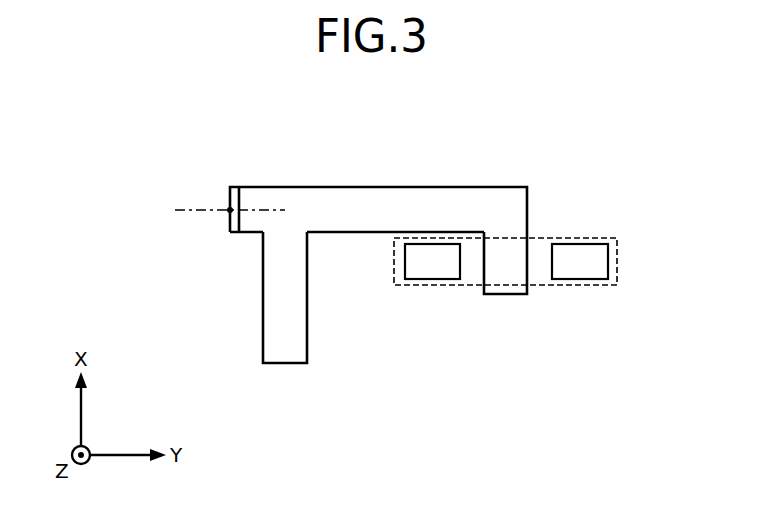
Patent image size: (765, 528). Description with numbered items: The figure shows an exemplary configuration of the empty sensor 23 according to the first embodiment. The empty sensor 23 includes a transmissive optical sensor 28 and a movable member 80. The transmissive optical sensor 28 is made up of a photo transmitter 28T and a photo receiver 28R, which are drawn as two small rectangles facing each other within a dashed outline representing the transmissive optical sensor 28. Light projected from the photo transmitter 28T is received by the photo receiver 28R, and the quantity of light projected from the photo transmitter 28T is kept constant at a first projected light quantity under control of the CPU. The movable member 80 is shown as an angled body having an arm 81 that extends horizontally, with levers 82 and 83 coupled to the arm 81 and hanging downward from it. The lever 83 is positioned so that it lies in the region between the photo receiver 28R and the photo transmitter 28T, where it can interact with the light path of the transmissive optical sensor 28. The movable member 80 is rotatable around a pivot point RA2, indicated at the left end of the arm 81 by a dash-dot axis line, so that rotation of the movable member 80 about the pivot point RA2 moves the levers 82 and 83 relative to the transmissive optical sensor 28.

The empty sensor 23 is at (419, 145).
The movable member 80 is at (503, 188).
The arm 81 is at (325, 212).
The lever 82 is at (285, 344).
The lever 83 is at (505, 273).
The transmissive optical sensor 28 is at (575, 238).
The photo receiver 28R is at (405, 259).
The photo transmitter 28T is at (608, 260).
The pivot point RA2 is at (205, 211).